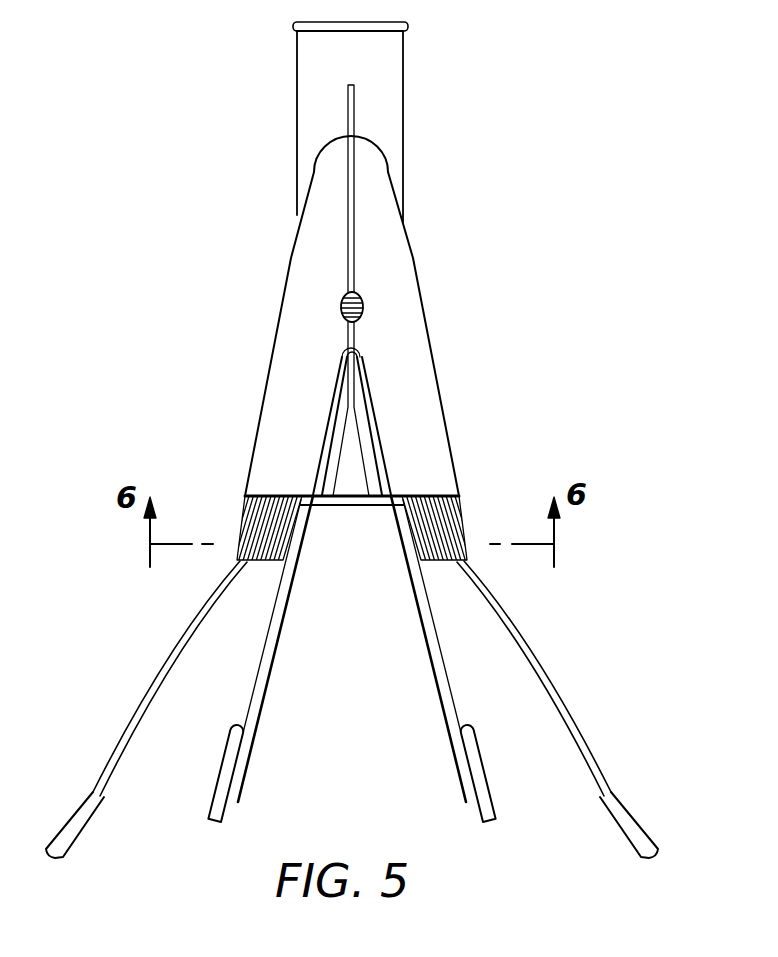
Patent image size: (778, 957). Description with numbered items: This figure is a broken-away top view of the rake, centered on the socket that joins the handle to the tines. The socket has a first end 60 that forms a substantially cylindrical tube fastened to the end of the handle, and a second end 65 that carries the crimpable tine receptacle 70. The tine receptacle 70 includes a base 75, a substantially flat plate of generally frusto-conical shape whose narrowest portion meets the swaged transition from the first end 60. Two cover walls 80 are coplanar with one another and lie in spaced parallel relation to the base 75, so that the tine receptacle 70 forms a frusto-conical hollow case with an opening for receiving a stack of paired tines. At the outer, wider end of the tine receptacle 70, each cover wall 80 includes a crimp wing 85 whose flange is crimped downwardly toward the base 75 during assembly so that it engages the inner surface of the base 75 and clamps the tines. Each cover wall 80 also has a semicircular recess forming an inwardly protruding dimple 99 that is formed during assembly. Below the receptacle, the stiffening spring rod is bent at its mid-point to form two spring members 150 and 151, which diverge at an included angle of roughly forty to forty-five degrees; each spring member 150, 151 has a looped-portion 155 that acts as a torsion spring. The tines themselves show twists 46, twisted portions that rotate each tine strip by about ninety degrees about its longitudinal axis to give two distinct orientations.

The first end 60 is at (412, 88).
The second end 65 is at (434, 249).
The cover walls 80 is at (404, 318).
The dimple 99 is at (334, 303).
The crimp wings 85 is at (360, 462).
The tine receptacle 70 is at (475, 492).
The base 75 is at (323, 510).
The spring member 150 is at (284, 660).
The spring member 151 is at (438, 702).
The looped-portion 155 is at (224, 766).
The twists 46 is at (93, 792).